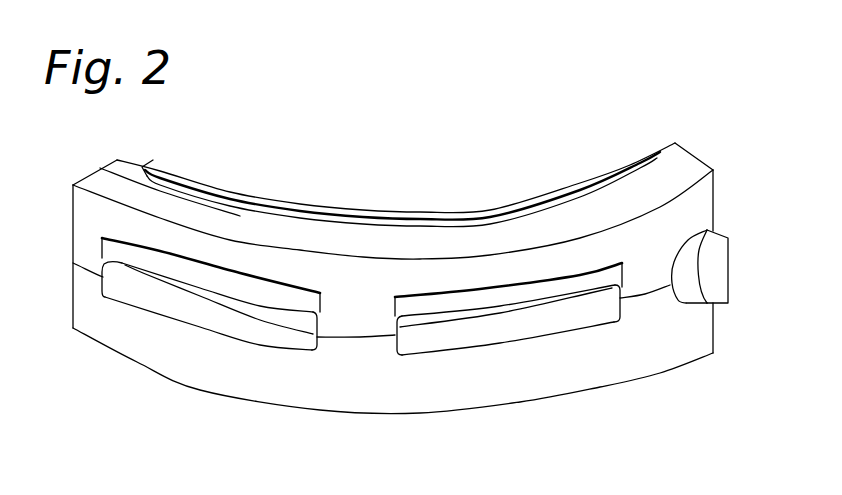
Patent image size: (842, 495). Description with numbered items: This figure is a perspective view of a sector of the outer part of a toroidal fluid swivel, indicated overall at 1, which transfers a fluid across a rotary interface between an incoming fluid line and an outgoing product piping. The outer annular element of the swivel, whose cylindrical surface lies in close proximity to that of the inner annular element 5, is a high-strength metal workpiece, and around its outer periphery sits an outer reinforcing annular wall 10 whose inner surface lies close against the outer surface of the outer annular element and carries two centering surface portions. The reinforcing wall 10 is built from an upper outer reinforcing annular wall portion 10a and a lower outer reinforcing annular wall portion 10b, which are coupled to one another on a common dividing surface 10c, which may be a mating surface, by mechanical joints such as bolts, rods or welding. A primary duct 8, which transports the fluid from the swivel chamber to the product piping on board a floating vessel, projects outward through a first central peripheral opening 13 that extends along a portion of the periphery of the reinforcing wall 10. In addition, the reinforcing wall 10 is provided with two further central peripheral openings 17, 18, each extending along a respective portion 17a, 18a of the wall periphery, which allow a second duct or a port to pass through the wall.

The wristwatch 1 is at (560, 122).
The inner annular element 5 is at (517, 203).
The primary duct 8 is at (717, 272).
The outer reinforcing annular wall 10 is at (713, 353).
The upper outer reinforcing annular wall portion 10a is at (686, 211).
The lower outer reinforcing annular wall portion 10b is at (587, 360).
The common dividing surface 10c is at (93, 272).
The first central peripheral opening 13 is at (684, 330).
The additional central peripheral opening 17 is at (203, 318).
The portion of the periphery 17a is at (200, 268).
The additional central peripheral opening 18 is at (530, 328).
The portion of the periphery 18a is at (506, 284).